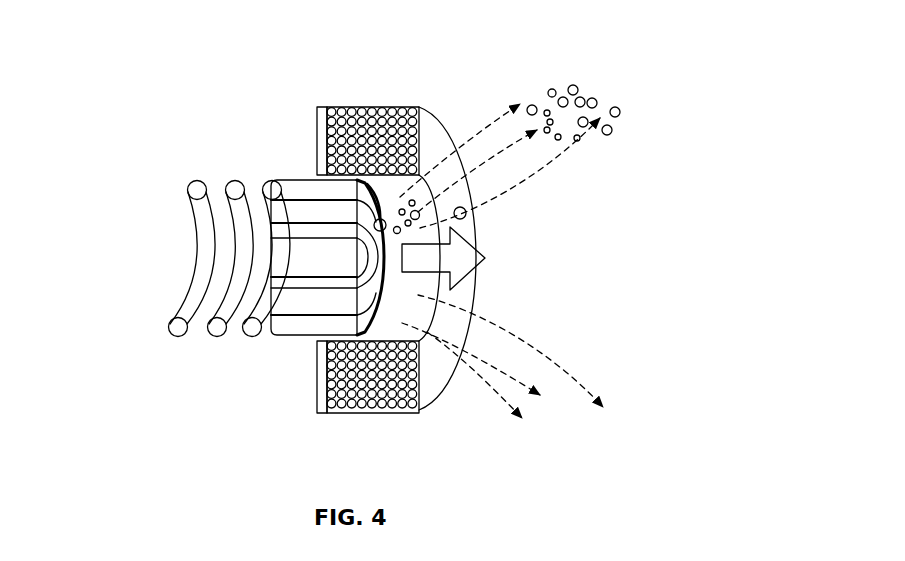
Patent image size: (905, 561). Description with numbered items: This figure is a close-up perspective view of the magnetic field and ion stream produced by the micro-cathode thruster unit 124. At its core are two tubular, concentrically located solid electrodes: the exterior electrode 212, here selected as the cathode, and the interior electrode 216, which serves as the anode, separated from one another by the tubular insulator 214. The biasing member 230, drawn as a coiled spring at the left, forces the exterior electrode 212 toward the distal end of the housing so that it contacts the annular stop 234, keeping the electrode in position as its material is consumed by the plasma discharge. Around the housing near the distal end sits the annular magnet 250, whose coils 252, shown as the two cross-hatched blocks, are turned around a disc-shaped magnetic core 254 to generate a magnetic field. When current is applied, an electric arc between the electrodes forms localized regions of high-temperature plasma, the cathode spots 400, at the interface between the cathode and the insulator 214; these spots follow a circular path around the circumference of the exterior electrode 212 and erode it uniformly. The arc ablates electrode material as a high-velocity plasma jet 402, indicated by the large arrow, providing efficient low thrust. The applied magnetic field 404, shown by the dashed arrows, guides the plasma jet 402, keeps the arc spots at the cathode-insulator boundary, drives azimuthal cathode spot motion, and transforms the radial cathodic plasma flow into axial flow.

The thruster unit 124 is at (237, 113).
The exterior electrode 212 is at (266, 186).
The tubular insulator 214 is at (282, 211).
The interior electrode 216 is at (283, 233).
The biasing member 230 is at (182, 200).
The annular stop 234 is at (370, 162).
The annular magnet 250 is at (374, 107).
The coils 252 is at (338, 107).
The magnetic core 254 is at (316, 124).
The cathode spot 400 is at (384, 220).
The plasma jet 402 is at (466, 258).
The magnetic field 404 is at (527, 177).